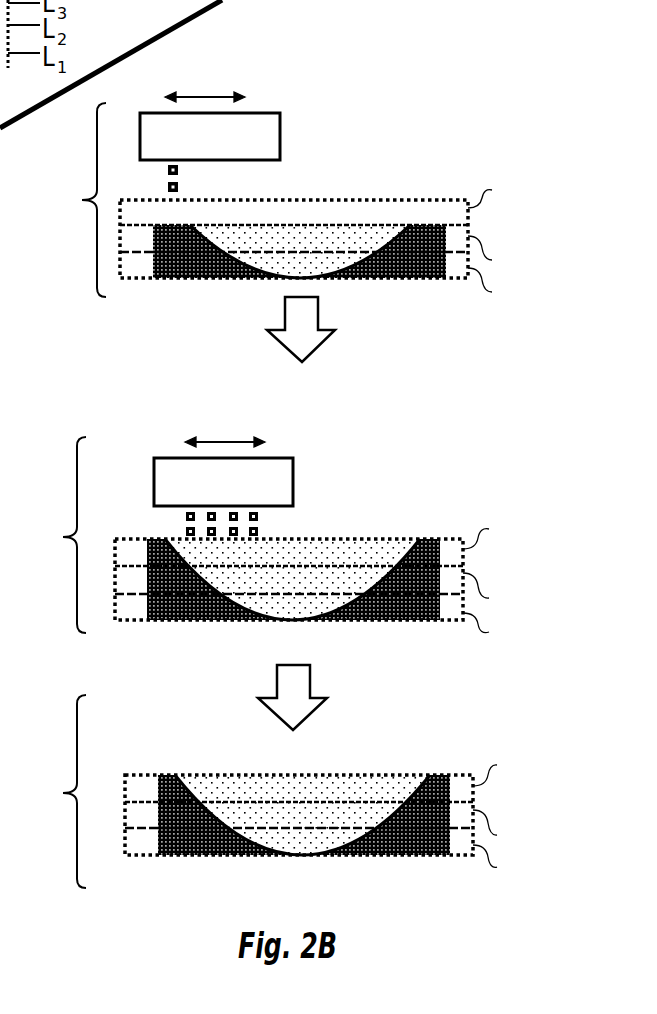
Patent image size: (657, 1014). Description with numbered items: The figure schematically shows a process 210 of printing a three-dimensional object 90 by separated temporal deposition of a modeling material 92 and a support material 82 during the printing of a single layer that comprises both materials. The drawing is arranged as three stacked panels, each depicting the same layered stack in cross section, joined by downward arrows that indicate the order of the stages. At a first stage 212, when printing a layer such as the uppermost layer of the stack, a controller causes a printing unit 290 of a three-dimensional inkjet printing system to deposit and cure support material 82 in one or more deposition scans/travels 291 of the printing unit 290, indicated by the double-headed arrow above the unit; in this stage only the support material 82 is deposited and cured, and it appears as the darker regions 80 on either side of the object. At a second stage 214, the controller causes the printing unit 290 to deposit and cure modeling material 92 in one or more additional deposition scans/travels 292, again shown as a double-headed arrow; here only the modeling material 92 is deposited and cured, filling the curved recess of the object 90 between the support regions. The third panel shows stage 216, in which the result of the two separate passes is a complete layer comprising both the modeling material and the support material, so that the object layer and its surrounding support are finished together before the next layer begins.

The process 210 is at (446, 73).
The first stage 212 is at (69, 200).
The second stage 214 is at (52, 535).
The stage 216 is at (50, 791).
The printing unit 290 is at (216, 309).
The deposition scans/travels 291 is at (205, 96).
The additional deposition scans/travels 292 is at (220, 440).
The support material 82 is at (167, 187).
The modeling material 92 is at (260, 531).
The first build material region 80 is at (207, 240).
The 3D object 90 is at (308, 242).